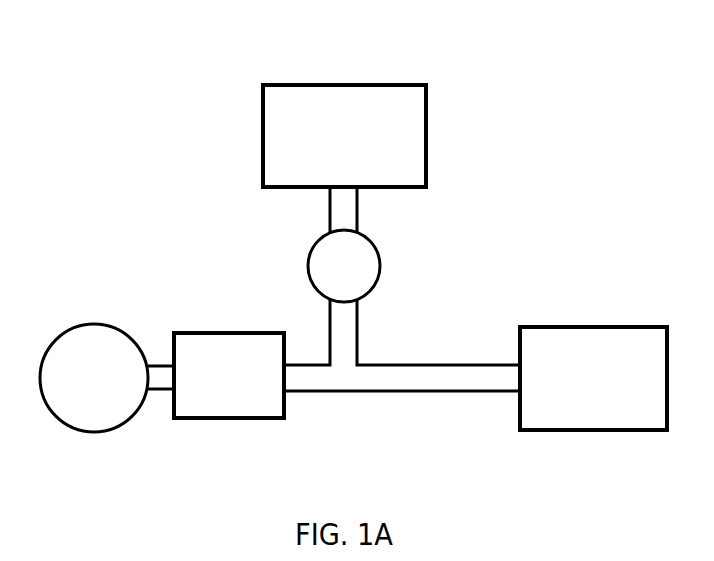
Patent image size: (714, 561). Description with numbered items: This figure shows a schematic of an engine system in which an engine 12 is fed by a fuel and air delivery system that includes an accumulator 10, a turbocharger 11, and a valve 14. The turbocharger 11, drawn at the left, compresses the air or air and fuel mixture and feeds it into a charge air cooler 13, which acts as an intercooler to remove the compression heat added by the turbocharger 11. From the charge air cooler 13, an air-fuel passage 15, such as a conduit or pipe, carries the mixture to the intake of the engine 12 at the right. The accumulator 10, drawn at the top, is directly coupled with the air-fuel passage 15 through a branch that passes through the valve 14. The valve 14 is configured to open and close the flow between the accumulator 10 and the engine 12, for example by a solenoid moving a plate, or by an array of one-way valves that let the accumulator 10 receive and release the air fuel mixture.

The accumulator 10 is at (333, 83).
The turbocharger 11 is at (83, 323).
The engine 12 is at (600, 326).
The charge air cooler 13 is at (243, 333).
The valve 14 is at (382, 268).
The air-fuel passage 15 is at (475, 363).